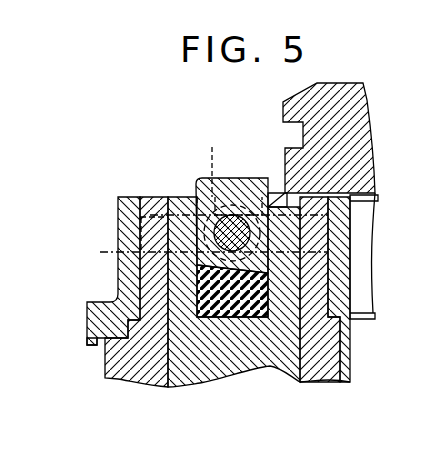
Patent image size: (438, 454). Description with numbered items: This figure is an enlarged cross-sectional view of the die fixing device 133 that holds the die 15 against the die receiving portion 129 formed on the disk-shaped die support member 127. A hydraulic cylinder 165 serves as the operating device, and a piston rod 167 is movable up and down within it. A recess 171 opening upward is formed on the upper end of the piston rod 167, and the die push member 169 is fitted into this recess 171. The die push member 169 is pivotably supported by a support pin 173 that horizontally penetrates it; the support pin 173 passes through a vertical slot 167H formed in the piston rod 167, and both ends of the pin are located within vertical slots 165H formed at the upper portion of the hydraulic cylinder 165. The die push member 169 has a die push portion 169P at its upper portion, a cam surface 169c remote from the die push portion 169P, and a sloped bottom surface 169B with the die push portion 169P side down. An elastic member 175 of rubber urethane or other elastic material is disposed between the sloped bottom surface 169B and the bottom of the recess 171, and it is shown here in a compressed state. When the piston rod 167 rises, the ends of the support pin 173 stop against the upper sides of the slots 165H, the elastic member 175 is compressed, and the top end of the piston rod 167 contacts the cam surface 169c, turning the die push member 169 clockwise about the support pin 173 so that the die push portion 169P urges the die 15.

The die 15 is at (301, 101).
The die support member 127 is at (91, 342).
The die receiving portion 129 is at (370, 199).
The die fixing device 133 is at (104, 384).
The hydraulic cylinder 165 is at (147, 372).
The vertical slots 165H is at (197, 263).
The piston rod 167 is at (283, 366).
The vertical slot 167H is at (130, 185).
The die push member 169 is at (198, 182).
The sloped bottom surface 169B is at (300, 287).
The cam surface 169c is at (197, 192).
The die push portion 169P is at (279, 193).
The recess 171 is at (135, 292).
The support pin 173 is at (232, 214).
The elastic member 175 is at (220, 318).